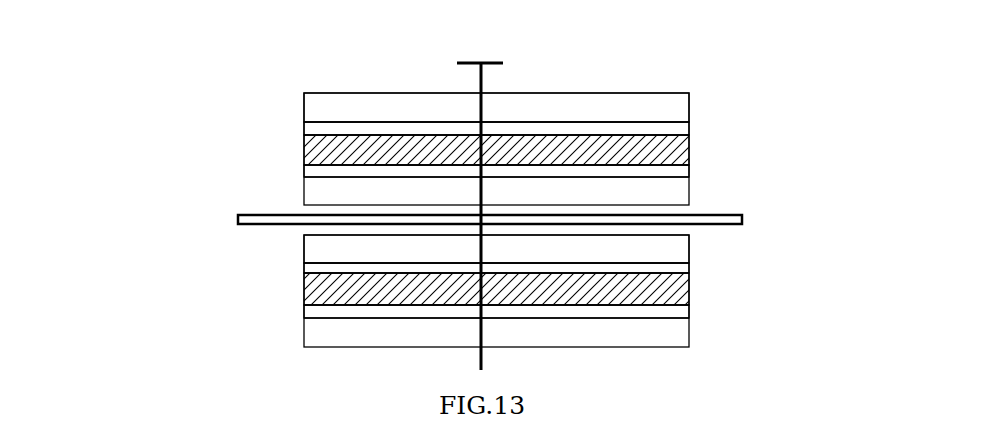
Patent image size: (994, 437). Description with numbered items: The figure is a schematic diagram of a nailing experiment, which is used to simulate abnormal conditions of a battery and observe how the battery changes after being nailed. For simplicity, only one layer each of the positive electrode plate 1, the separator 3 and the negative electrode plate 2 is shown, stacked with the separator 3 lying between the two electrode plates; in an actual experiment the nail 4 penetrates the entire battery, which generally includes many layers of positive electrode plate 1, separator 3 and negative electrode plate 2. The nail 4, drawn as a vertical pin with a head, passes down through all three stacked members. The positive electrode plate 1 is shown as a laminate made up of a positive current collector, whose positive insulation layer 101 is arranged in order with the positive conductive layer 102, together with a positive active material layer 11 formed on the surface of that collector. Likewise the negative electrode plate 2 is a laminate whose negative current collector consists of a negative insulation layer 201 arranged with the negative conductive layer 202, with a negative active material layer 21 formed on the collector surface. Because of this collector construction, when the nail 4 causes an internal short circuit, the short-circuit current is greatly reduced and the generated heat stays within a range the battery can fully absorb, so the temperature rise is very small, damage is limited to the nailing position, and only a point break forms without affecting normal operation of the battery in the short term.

The positive electrode plate 1 is at (300, 122).
The positive active material layer 11 is at (667, 108).
The positive insulation layer 101 is at (310, 152).
The positive conductive layer 102 is at (667, 128).
The negative electrode plate 2 is at (297, 310).
The negative active material layer 21 is at (667, 245).
The negative insulation layer 201 is at (305, 287).
The negative conductive layer 202 is at (667, 271).
The separator 3 is at (285, 213).
The nail 4 is at (477, 80).